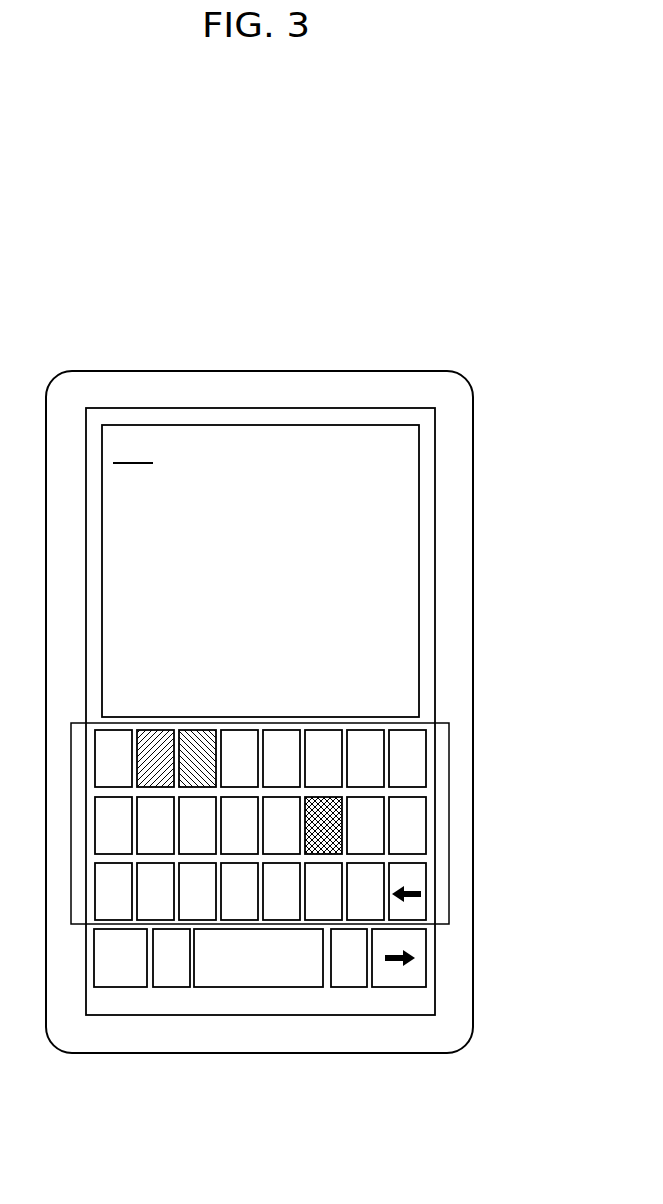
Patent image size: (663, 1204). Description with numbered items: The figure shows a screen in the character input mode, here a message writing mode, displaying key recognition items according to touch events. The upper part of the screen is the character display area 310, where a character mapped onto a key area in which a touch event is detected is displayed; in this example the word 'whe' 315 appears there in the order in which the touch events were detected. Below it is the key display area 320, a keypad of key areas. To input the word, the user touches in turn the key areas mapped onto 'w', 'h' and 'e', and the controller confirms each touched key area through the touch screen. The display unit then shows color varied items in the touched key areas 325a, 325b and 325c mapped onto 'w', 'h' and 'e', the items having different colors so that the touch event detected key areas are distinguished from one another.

The character display area 310 is at (419, 571).
The word 'whe' 315 is at (132, 463).
The key display area 320 is at (449, 832).
The key area mapped onto 'w' 325a is at (153, 738).
The key area mapped onto 'h' 325b is at (322, 797).
The key area mapped onto 'e' 325c is at (197, 738).